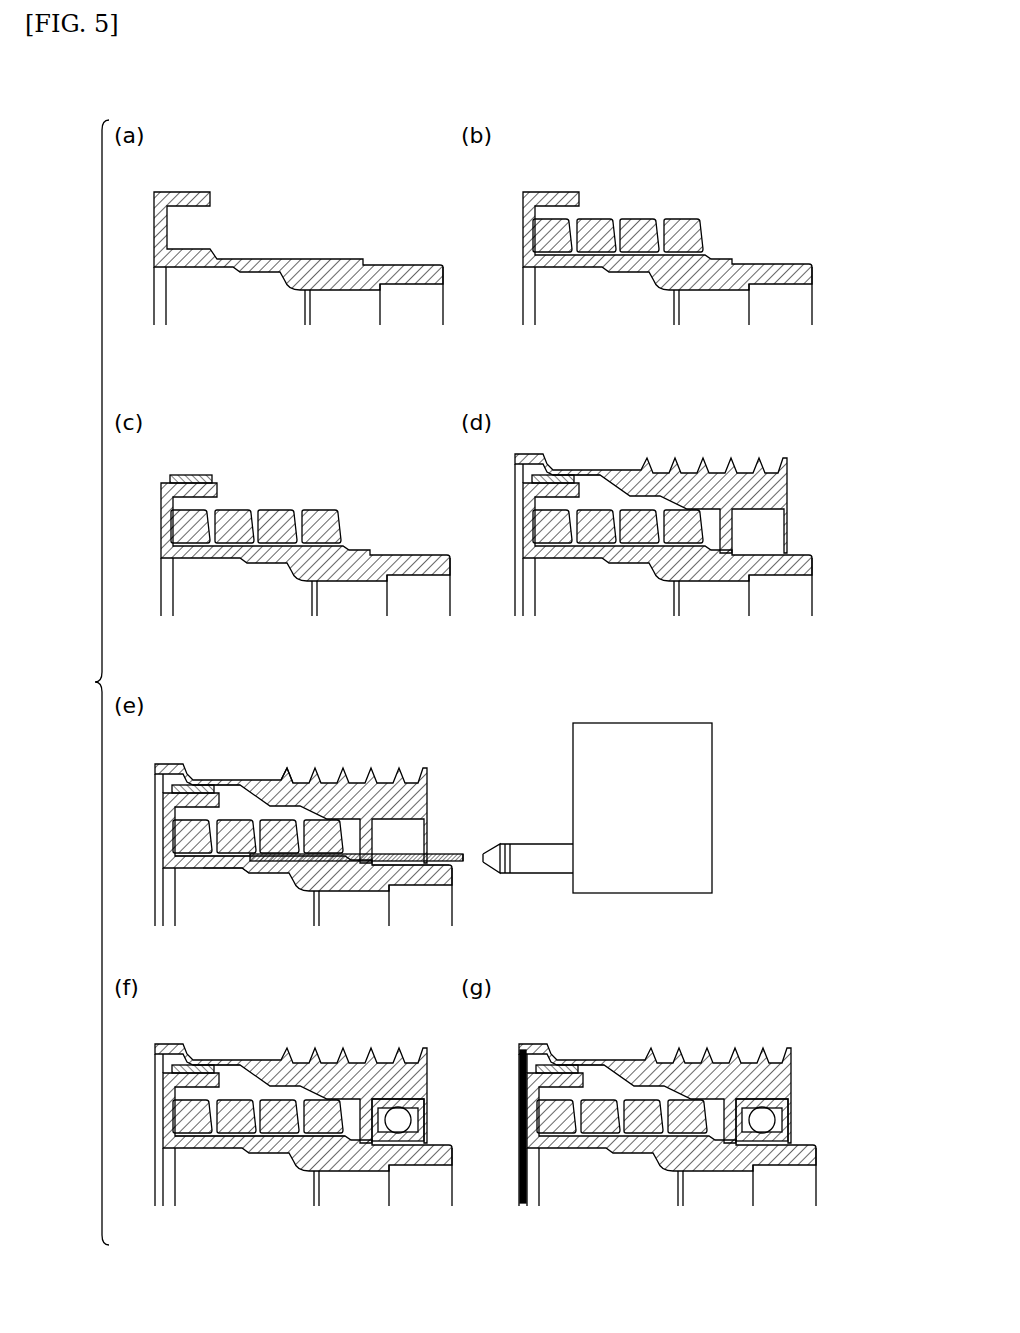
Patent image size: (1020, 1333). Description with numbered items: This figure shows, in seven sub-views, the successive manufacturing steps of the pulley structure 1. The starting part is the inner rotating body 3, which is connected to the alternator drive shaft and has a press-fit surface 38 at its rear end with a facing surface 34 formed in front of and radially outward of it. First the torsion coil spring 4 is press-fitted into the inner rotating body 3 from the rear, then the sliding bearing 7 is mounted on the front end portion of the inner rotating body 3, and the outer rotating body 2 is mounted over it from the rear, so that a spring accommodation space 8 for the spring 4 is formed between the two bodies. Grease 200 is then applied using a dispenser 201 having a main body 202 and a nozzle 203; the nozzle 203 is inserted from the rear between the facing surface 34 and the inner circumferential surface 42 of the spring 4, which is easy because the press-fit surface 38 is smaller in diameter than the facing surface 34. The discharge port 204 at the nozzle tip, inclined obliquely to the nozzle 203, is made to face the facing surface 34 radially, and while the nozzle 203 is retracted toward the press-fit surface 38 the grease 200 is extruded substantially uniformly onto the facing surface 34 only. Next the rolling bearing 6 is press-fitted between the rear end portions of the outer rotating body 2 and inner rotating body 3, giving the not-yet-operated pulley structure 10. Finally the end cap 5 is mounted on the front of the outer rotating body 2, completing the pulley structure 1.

The pulley structure 1 is at (547, 1041).
The outer rotating body 2 is at (473, 818).
The inner rotating body 3 is at (485, 699).
The torsion coil spring 4 is at (439, 645).
The end cap 5 is at (507, 1126).
The rolling bearing 6 is at (589, 1077).
The sliding bearing 7 is at (378, 750).
The spring accommodation space 8 is at (406, 748).
The pulley structure 10 is at (176, 1041).
The facing surface 34 is at (208, 917).
The press-fit surface 38 is at (410, 909).
The inner circumferential surface 42 is at (182, 855).
The grease 200 is at (260, 1056).
The dispenser 201 is at (756, 749).
The main body 202 is at (681, 808).
The nozzle 203 is at (411, 832).
The discharge port 204 is at (294, 757).